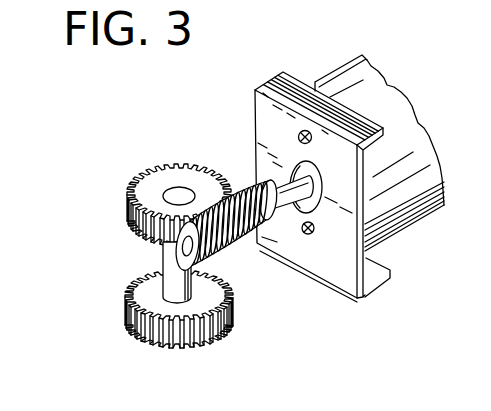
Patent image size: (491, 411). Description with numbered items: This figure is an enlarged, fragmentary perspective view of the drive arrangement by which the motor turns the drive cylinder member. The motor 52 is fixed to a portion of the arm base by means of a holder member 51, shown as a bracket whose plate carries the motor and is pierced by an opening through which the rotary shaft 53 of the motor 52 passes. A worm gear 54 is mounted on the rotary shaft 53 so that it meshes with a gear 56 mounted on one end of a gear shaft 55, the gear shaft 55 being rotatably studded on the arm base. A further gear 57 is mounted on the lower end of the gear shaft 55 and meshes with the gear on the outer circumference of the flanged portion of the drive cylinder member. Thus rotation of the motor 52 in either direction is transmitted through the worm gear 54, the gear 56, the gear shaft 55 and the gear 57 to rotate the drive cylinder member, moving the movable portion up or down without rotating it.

The holder member 51 is at (302, 92).
The motor 52 is at (385, 92).
The rotary shaft 53 is at (316, 204).
The worm gear 54 is at (234, 240).
The gear shaft 55 is at (170, 282).
The gear 56 is at (177, 178).
The gear 57 is at (167, 307).